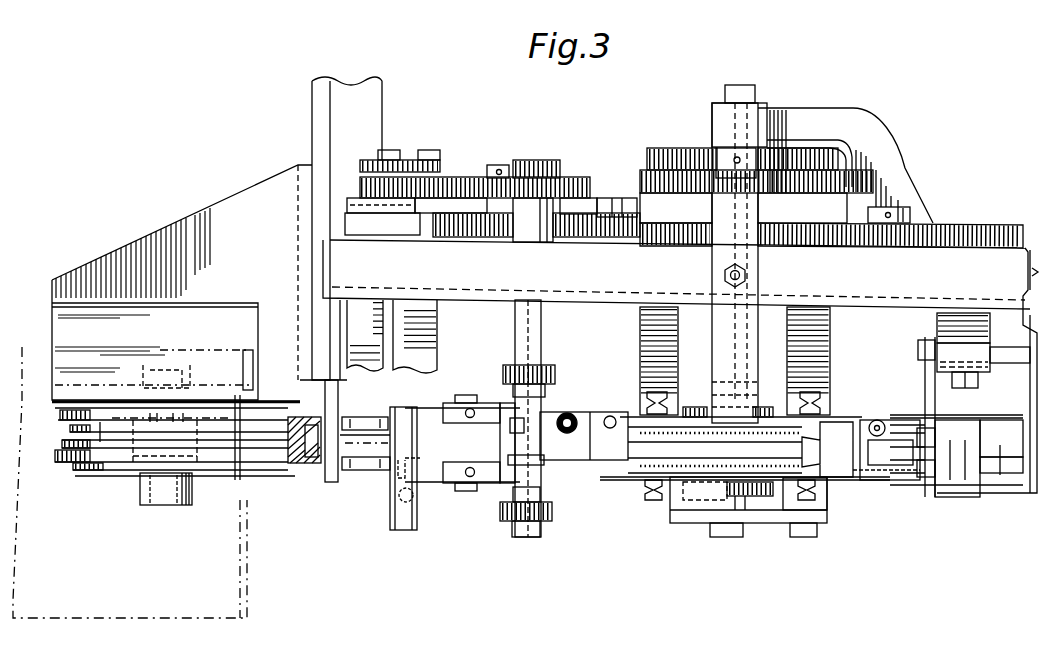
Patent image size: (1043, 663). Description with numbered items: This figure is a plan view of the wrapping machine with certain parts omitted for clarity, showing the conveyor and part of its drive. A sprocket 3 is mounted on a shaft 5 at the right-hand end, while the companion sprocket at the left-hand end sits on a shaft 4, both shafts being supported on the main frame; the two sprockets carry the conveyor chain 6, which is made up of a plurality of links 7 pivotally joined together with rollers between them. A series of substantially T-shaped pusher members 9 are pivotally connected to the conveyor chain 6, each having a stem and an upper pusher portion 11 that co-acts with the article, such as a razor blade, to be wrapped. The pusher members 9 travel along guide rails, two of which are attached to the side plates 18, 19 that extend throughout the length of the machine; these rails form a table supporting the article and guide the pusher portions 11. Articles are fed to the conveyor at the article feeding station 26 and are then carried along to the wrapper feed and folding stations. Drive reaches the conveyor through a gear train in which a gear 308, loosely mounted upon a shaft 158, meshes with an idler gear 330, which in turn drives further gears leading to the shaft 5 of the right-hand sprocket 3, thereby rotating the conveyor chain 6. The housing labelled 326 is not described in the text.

The sprocket 3 is at (420, 480).
The shaft 4 is at (168, 506).
The shaft 5 is at (52, 447).
The conveyor chain 6 is at (311, 338).
The link 7 is at (337, 533).
The pusher member 9 is at (368, 436).
The pusher portion 11 is at (735, 298).
The side plate 18 is at (592, 473).
The side plate 19 is at (597, 403).
The article feeding station 26 is at (307, 478).
The shaft 158 is at (712, 362).
The gear 308 is at (702, 243).
The housing 326 is at (870, 117).
The idler gear 330 is at (958, 249).